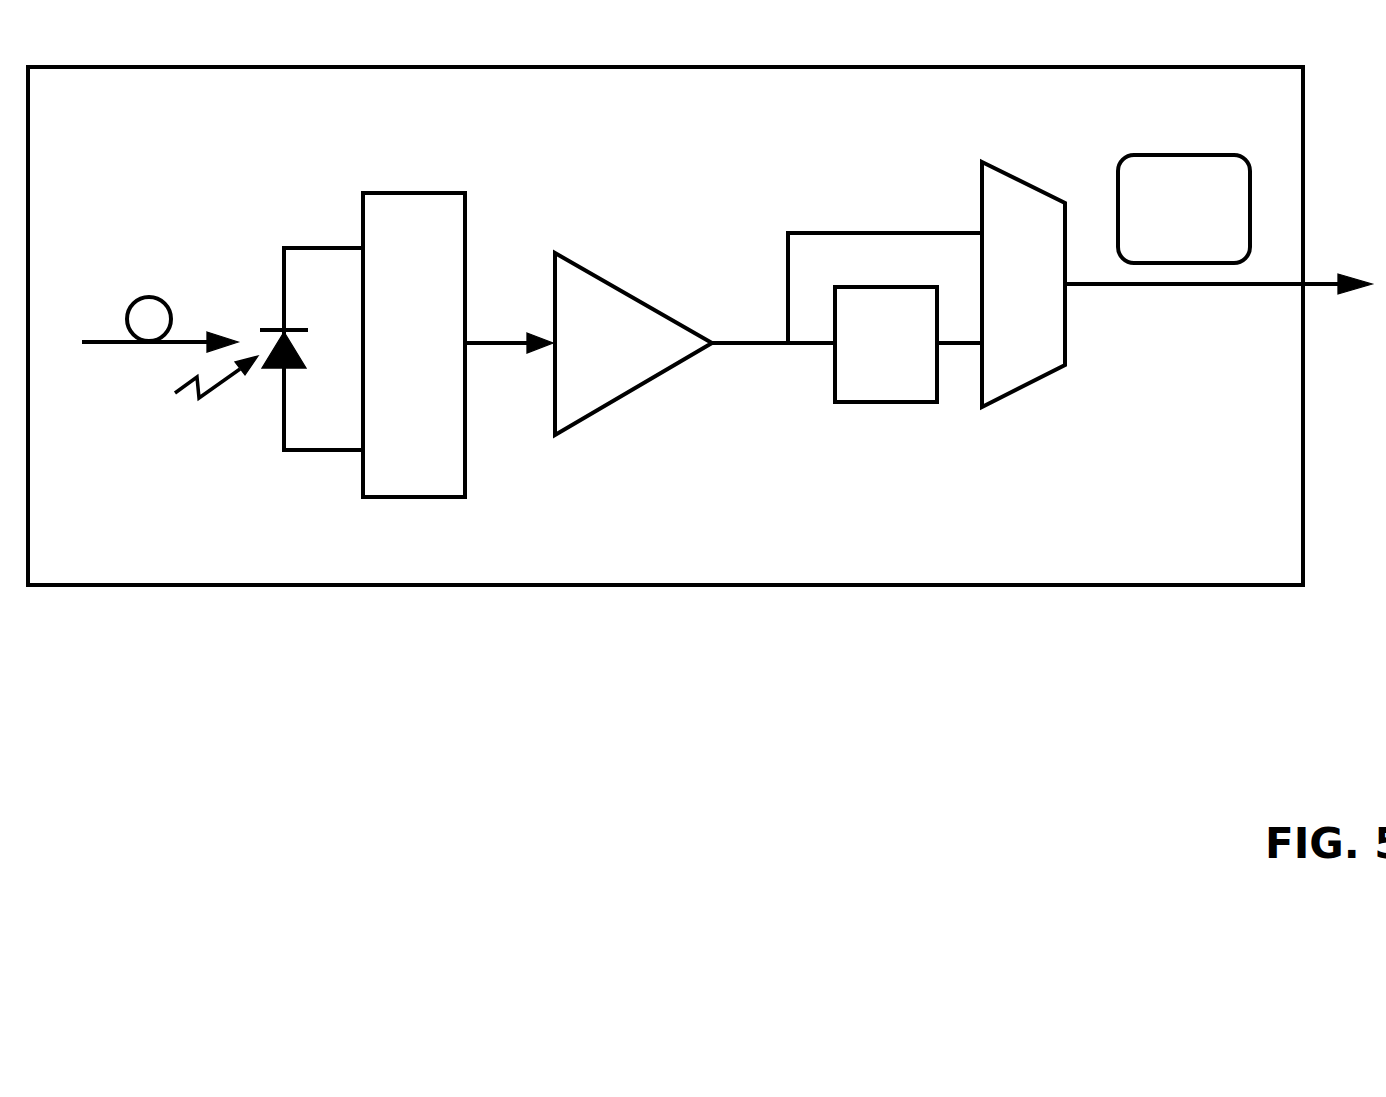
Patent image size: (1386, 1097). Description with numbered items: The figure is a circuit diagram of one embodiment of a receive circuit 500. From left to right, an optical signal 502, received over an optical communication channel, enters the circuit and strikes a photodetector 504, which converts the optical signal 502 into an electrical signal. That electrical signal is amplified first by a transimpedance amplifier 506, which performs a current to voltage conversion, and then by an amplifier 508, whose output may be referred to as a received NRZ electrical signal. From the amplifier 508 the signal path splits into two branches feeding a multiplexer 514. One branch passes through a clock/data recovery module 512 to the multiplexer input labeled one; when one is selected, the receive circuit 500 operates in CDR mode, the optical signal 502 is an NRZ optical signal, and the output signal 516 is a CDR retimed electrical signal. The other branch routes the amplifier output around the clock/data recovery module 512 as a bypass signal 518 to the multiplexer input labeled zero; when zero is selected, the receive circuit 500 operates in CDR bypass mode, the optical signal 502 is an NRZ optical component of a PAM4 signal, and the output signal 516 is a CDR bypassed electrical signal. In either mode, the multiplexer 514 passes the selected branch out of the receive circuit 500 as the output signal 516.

The receive circuit 500 is at (1181, 562).
The optical signal 502 is at (147, 297).
The photodetector 504 is at (273, 368).
The transimpedance amplifier 506 is at (392, 370).
The amplifier 508 is at (583, 370).
The clock/data recovery module 512 is at (864, 370).
The multiplexer 514 is at (992, 165).
The output signal 516 is at (1162, 249).
The bypass signal 518 is at (803, 232).